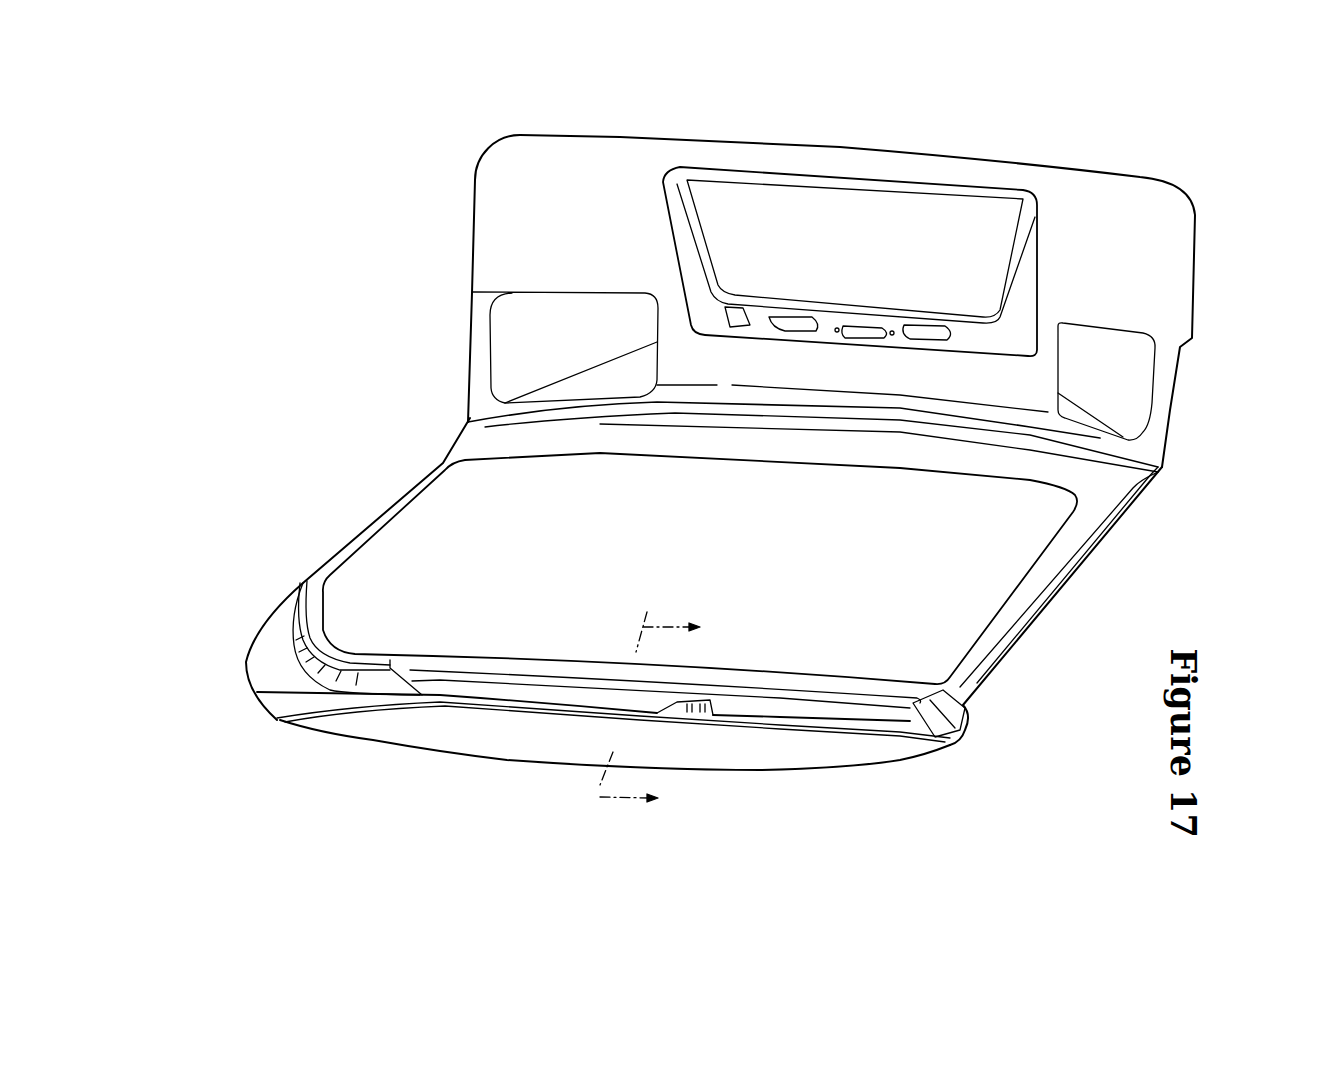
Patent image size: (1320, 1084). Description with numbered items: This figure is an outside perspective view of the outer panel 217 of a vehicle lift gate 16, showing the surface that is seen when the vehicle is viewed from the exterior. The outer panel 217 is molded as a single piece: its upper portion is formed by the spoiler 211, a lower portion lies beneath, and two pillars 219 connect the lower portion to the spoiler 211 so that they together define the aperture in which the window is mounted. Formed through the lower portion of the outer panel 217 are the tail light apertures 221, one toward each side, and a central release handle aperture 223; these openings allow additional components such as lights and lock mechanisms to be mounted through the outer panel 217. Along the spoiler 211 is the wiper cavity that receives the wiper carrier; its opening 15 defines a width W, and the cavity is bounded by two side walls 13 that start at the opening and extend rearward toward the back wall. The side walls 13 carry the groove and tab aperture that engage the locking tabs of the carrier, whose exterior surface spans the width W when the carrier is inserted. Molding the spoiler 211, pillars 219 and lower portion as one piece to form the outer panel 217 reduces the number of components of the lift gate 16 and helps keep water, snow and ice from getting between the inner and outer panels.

The outer panel 217 is at (719, 464).
The tail light aperture 221 is at (537, 327).
The release handle aperture 223 is at (883, 247).
The pillar 219 is at (392, 516).
The spoiler 211 is at (495, 740).
The opening 15 is at (828, 697).
The width W is at (757, 702).
The side wall 13 is at (415, 675).
The lift gate 16 is at (649, 713).